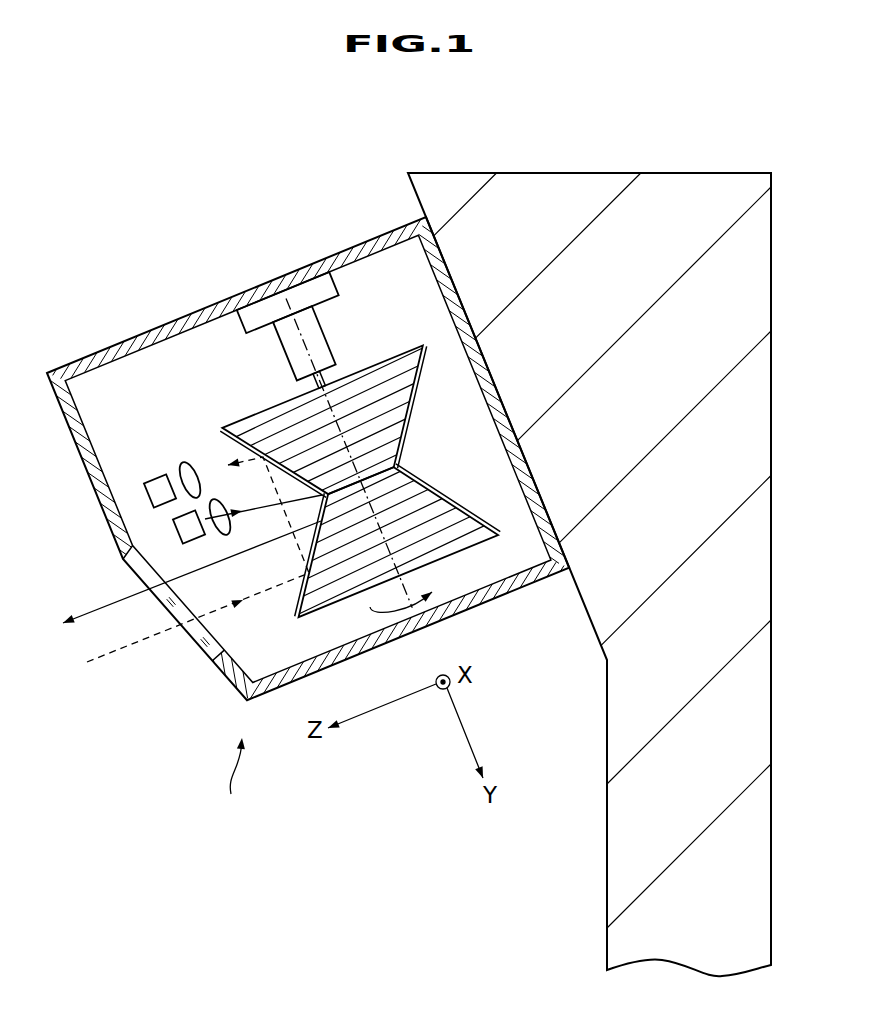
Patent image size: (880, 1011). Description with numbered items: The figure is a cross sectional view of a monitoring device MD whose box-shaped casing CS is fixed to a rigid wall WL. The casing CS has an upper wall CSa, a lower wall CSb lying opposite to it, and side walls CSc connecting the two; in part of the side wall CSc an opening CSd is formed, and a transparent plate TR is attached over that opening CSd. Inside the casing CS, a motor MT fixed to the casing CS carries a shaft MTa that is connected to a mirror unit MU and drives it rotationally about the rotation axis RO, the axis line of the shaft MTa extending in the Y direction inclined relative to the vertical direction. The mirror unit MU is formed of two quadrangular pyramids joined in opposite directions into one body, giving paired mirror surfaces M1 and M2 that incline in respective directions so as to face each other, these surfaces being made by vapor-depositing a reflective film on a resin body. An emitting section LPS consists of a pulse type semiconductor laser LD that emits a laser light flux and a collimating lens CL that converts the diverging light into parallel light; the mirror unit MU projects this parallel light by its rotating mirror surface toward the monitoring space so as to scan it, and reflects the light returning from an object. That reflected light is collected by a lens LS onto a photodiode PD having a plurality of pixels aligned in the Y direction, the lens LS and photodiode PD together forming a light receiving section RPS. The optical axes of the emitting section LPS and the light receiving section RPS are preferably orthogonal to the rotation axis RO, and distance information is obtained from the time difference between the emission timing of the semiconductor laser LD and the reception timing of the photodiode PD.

The casing CS is at (300, 445).
The upper wall CSa is at (290, 268).
The lower wall CSb is at (497, 590).
The side wall CSc is at (66, 420).
The opening CSd is at (212, 656).
The motor MT is at (329, 342).
The shaft MTa is at (312, 386).
The mirror unit MU is at (361, 480).
The mirror surface M1 is at (222, 427).
The mirror surface M2 is at (300, 598).
The rotation axis RO is at (347, 448).
The light receiving section RPS is at (177, 530).
The photodiode PD is at (142, 497).
The lens LS is at (212, 484).
The emitting section LPS is at (186, 547).
The semiconductor laser LD is at (172, 527).
The collimating lens CL is at (226, 532).
The transparent plate TR is at (162, 608).
The wall WL is at (628, 810).
The monitoring device MD is at (229, 781).